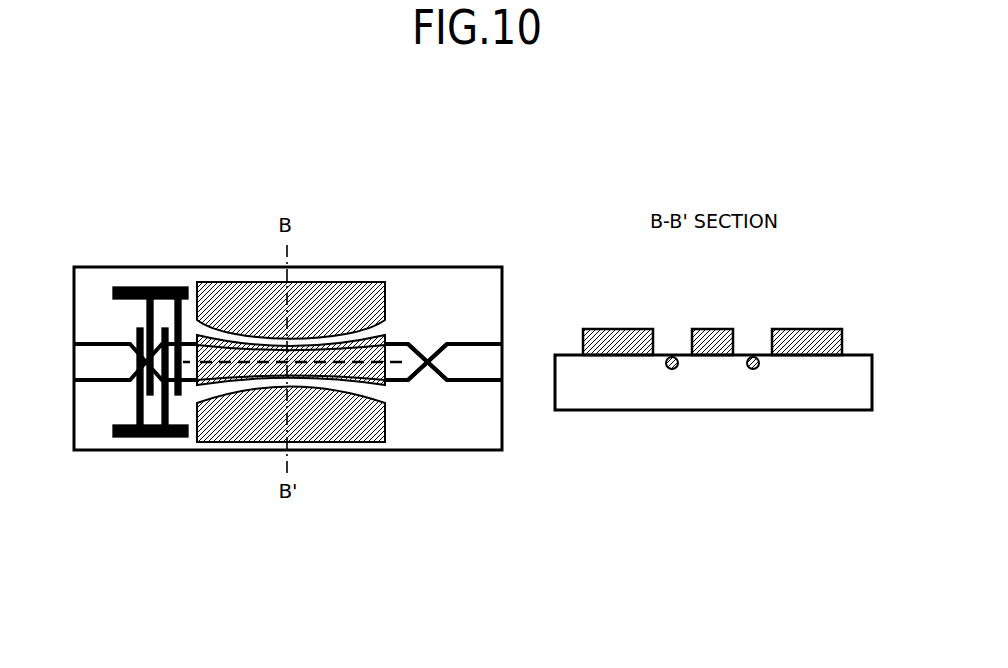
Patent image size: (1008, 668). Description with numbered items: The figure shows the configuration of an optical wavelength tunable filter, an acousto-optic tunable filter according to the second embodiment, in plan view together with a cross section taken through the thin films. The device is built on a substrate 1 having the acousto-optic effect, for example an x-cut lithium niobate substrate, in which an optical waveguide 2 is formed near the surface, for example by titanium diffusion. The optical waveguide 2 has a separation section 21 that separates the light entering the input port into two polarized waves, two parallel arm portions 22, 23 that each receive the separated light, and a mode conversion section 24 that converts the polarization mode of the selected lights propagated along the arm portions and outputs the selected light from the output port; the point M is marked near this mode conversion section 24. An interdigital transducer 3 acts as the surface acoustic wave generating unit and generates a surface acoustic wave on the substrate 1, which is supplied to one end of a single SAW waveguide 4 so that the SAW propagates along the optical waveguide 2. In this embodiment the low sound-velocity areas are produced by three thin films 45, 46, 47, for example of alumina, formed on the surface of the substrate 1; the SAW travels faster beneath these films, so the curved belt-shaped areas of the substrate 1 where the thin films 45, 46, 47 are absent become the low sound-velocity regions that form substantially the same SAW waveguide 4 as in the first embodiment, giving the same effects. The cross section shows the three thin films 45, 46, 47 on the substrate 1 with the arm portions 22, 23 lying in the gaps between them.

The substrate 1 is at (485, 450).
The optical waveguide 2 is at (95, 312).
The interdigital transducer 3 is at (138, 438).
The SAW waveguide 4 is at (249, 231).
The separation section 21 is at (147, 358).
The arm portion 22 is at (397, 350).
The arm portion 23 is at (405, 364).
The mode conversion section 24 is at (432, 350).
The thin film 45 is at (308, 282).
The thin film 46 is at (343, 342).
The thin film 47 is at (317, 435).
The coupling point M is at (430, 366).